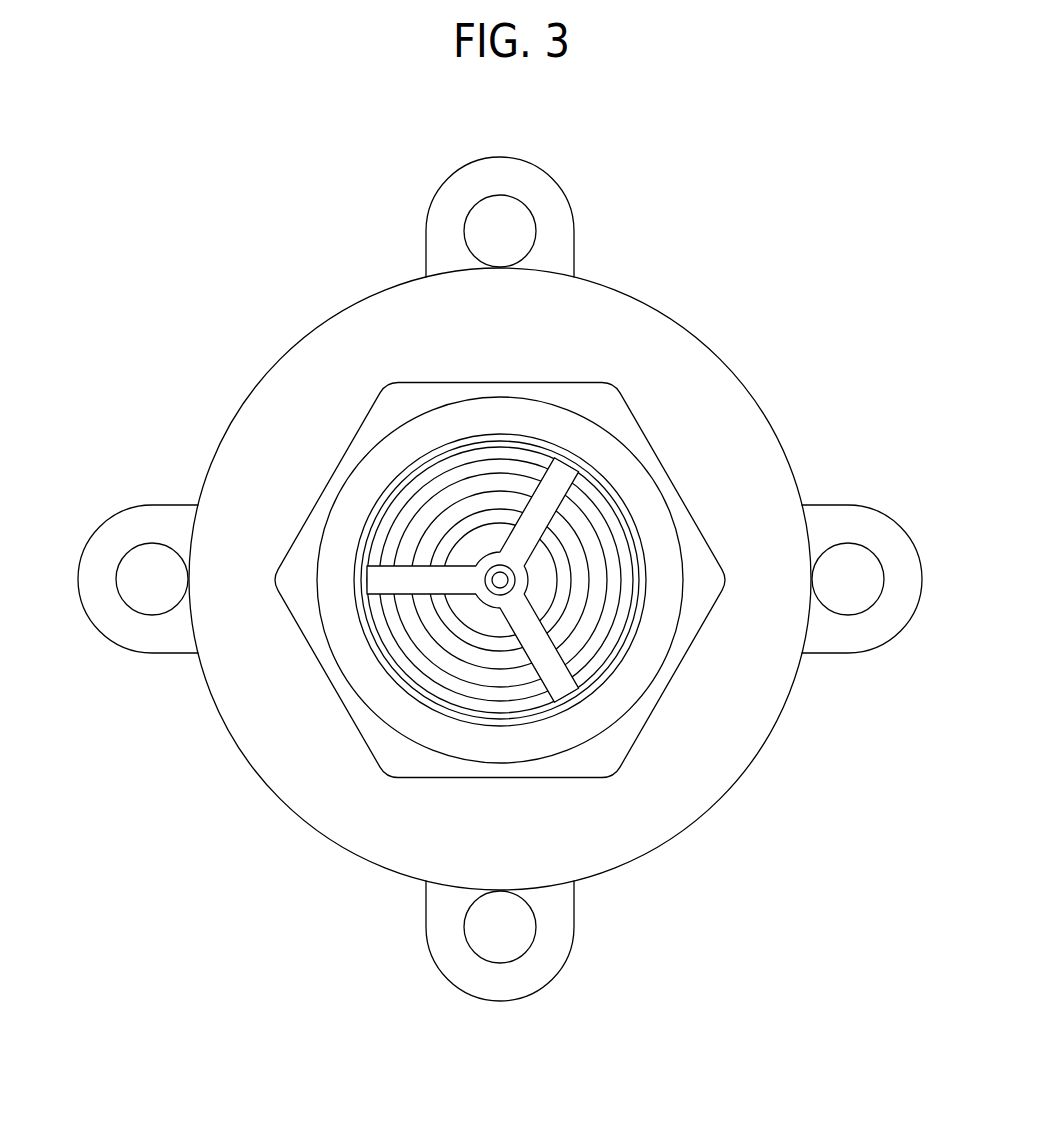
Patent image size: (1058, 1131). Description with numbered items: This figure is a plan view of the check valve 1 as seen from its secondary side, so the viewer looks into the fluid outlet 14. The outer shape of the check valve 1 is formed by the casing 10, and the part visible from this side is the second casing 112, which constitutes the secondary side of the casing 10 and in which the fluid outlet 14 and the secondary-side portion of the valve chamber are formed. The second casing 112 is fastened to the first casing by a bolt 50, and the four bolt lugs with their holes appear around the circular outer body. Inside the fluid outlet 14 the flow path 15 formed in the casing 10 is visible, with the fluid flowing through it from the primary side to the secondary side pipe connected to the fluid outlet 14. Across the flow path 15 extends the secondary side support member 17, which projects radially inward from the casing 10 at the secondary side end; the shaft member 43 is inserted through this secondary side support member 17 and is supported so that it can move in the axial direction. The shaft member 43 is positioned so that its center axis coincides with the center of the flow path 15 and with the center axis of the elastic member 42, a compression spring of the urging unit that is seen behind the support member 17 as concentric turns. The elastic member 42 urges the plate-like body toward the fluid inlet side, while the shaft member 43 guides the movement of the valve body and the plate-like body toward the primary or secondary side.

The check valve 1 is at (287, 250).
The casing 10 is at (523, 579).
The second casing 112 is at (692, 385).
The fluid outlet 14 is at (625, 498).
The flow path 15 is at (412, 477).
The secondary side support member 17 is at (560, 686).
The elastic member 42 is at (598, 590).
The shaft member 43 is at (502, 582).
The bolt 50 is at (507, 222).